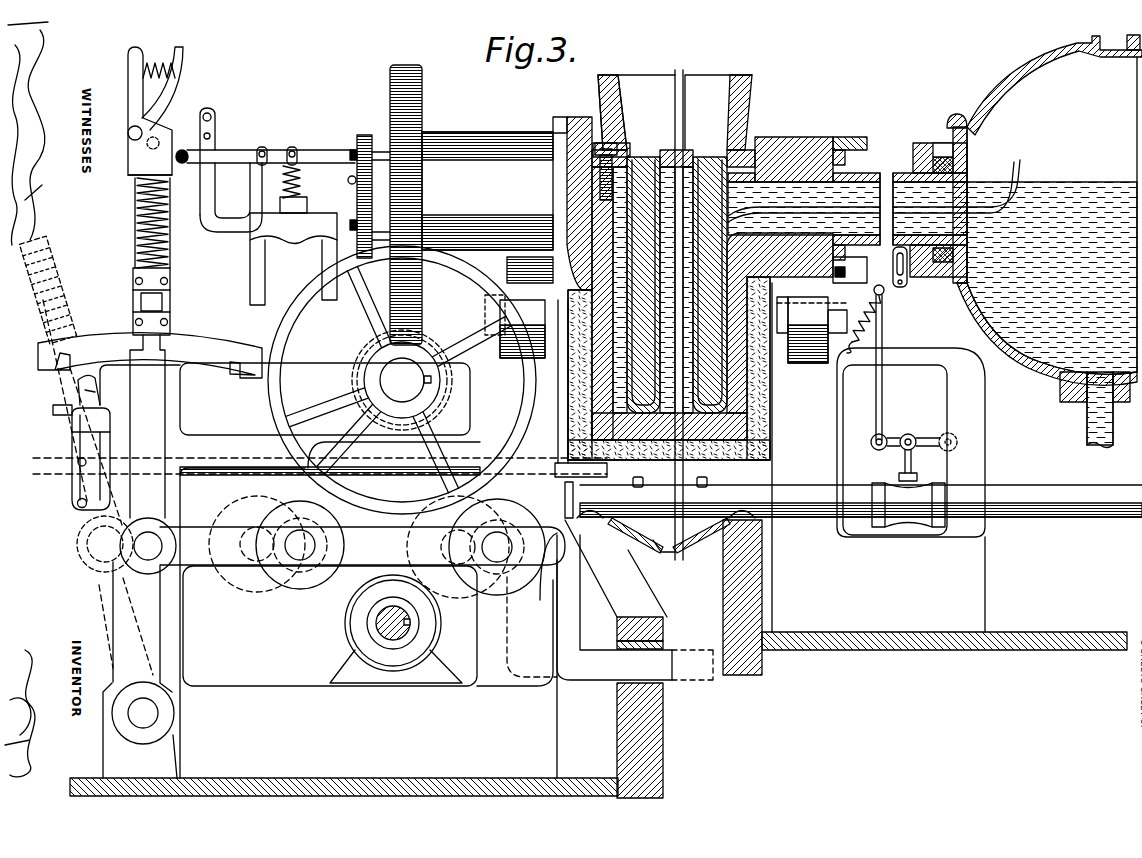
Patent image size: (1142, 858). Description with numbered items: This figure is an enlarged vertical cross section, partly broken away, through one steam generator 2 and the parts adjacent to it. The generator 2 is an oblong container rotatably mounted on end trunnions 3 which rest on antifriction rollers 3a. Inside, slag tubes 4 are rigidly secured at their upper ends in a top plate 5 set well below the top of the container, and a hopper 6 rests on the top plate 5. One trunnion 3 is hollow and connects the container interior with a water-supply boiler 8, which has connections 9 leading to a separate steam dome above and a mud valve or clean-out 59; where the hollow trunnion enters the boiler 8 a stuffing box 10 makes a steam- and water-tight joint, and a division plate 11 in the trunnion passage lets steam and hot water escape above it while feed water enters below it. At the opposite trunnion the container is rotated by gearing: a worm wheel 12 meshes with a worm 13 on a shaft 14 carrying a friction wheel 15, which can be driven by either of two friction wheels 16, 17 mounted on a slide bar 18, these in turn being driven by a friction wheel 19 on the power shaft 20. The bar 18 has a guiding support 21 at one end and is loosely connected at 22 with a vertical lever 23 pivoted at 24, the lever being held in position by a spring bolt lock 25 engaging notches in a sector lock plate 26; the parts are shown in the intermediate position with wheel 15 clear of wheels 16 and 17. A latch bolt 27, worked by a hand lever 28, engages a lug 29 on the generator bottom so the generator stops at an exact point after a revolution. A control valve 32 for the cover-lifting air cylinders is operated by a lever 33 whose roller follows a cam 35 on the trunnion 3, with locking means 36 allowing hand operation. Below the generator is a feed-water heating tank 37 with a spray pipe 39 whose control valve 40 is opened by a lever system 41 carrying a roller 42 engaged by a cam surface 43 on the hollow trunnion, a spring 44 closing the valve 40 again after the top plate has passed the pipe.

The generator 2 is at (720, 413).
The end trunnion 3 is at (797, 137).
The antifriction rollers 3a is at (812, 363).
The slag tubes 4 is at (720, 320).
The top plate 5 is at (684, 152).
The hopper 6 is at (745, 110).
The water-supply boiler 8 is at (1047, 221).
The connections 9 is at (1112, 52).
The stuffing box 10 is at (930, 147).
The division plate 11 is at (1012, 175).
The worm wheel 12 is at (422, 95).
The worm 13 is at (360, 358).
The shaft 14 is at (405, 380).
The friction wheel 15 is at (282, 412).
The friction wheel 16 is at (500, 512).
The friction wheel 17 is at (296, 515).
The slide bar 18 is at (362, 546).
The friction wheel 19 is at (345, 622).
The power shaft 20 is at (392, 640).
The guiding support 21 is at (673, 678).
The loose connection 22 is at (140, 553).
The vertical lever 23 is at (143, 488).
The pivot 24 is at (143, 722).
The spring bolt lock 25 is at (155, 295).
The sector lock plate 26 is at (205, 330).
The latch bolt 27 is at (232, 470).
The hand lever 28 is at (82, 437).
The lug 29 is at (600, 450).
The control valve 32 is at (296, 232).
The lever 33 is at (312, 162).
The cam 35 is at (352, 175).
The locking means 36 is at (215, 135).
The feed-water heating tank 37 is at (688, 545).
The spray pipe 39 is at (815, 517).
The control valve 40 is at (910, 520).
The lever system 41 is at (882, 405).
The roller 42 is at (858, 255).
The cam surface 43 is at (852, 150).
The spring 44 is at (870, 323).
The mud valve 59 is at (1095, 410).